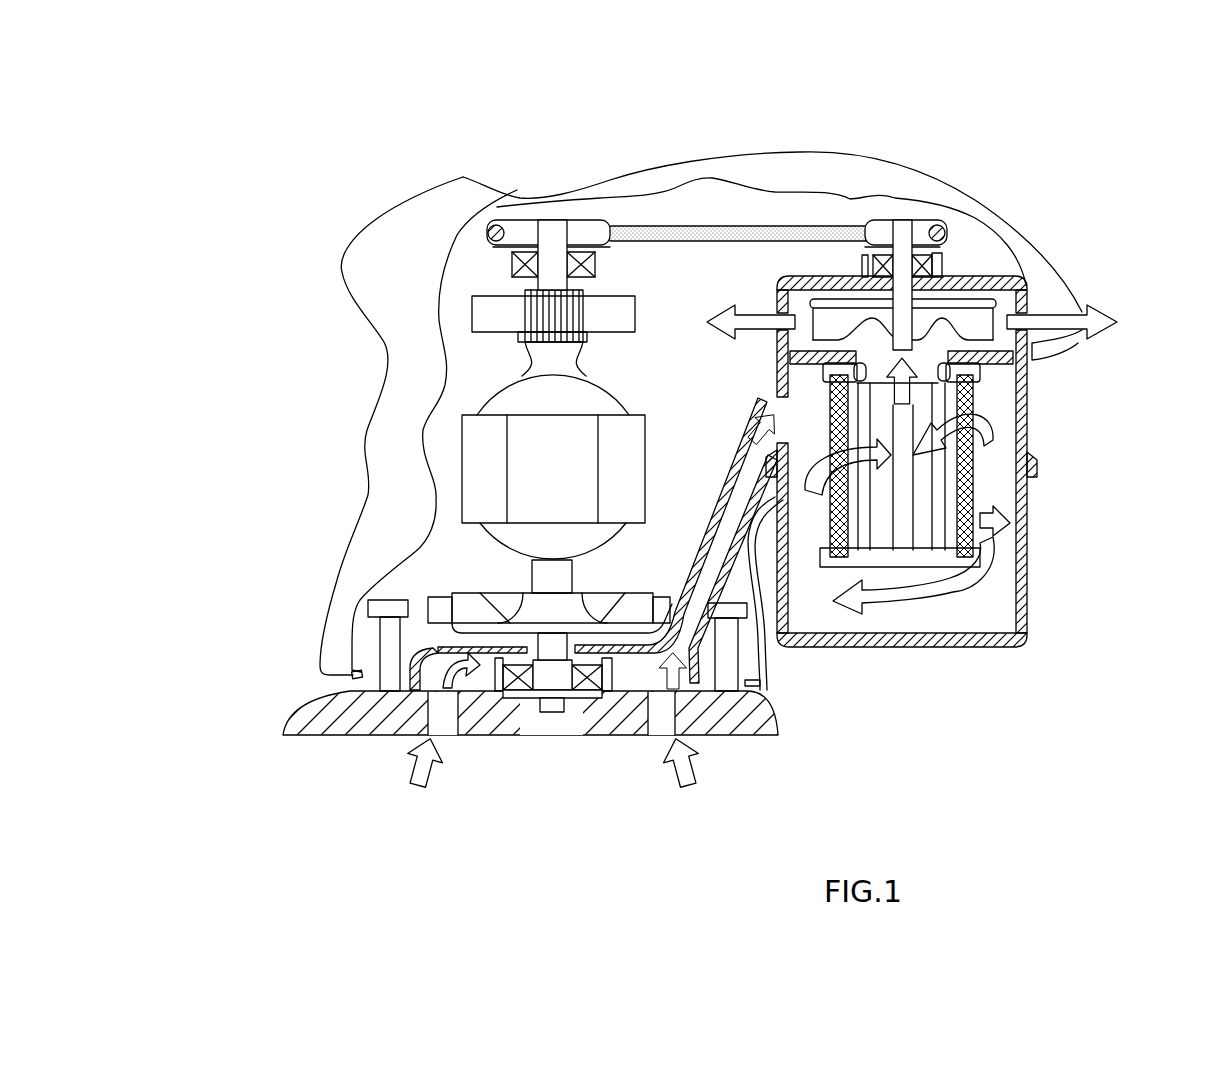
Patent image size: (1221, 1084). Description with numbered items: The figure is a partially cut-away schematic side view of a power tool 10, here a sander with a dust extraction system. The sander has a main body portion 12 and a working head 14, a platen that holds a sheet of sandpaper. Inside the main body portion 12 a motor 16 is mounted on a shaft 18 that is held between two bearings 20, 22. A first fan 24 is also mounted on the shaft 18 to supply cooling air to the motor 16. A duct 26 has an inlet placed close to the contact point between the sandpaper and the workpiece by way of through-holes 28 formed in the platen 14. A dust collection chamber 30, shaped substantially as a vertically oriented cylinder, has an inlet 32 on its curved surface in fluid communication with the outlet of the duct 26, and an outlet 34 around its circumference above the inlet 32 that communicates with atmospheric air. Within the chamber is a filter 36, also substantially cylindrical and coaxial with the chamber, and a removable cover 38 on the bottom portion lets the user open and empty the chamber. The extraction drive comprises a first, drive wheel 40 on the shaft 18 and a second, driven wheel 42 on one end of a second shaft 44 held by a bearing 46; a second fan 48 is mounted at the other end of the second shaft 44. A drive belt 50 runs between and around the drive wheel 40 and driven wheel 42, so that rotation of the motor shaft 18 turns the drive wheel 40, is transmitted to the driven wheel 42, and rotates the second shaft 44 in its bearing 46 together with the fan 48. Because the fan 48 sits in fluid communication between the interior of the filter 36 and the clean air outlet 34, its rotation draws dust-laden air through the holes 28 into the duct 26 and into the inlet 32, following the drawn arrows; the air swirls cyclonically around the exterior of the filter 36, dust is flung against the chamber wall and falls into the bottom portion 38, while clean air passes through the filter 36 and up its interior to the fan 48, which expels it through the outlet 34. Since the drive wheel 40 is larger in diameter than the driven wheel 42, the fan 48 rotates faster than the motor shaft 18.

The power tool 10 is at (288, 144).
The main body portion 12 is at (403, 487).
The working head 14 is at (337, 720).
The motor 16 is at (533, 460).
The shaft 18 is at (547, 575).
The bearing 20 is at (517, 688).
The bearing 22 is at (517, 263).
The first fan 24 is at (475, 612).
The duct 26 is at (710, 548).
The through-holes 28 is at (445, 717).
The dust collection chamber 30 is at (1021, 423).
The inlet 32 is at (787, 420).
The outlet 34 is at (1026, 313).
The filter 36 is at (922, 497).
The removable cover 38 is at (1023, 597).
The drive wheel 40 is at (528, 231).
The driven wheel 42 is at (920, 230).
The second shaft 44 is at (885, 320).
The bearing 46 is at (928, 267).
The second fan 48 is at (1020, 310).
The drive belt 50 is at (730, 236).